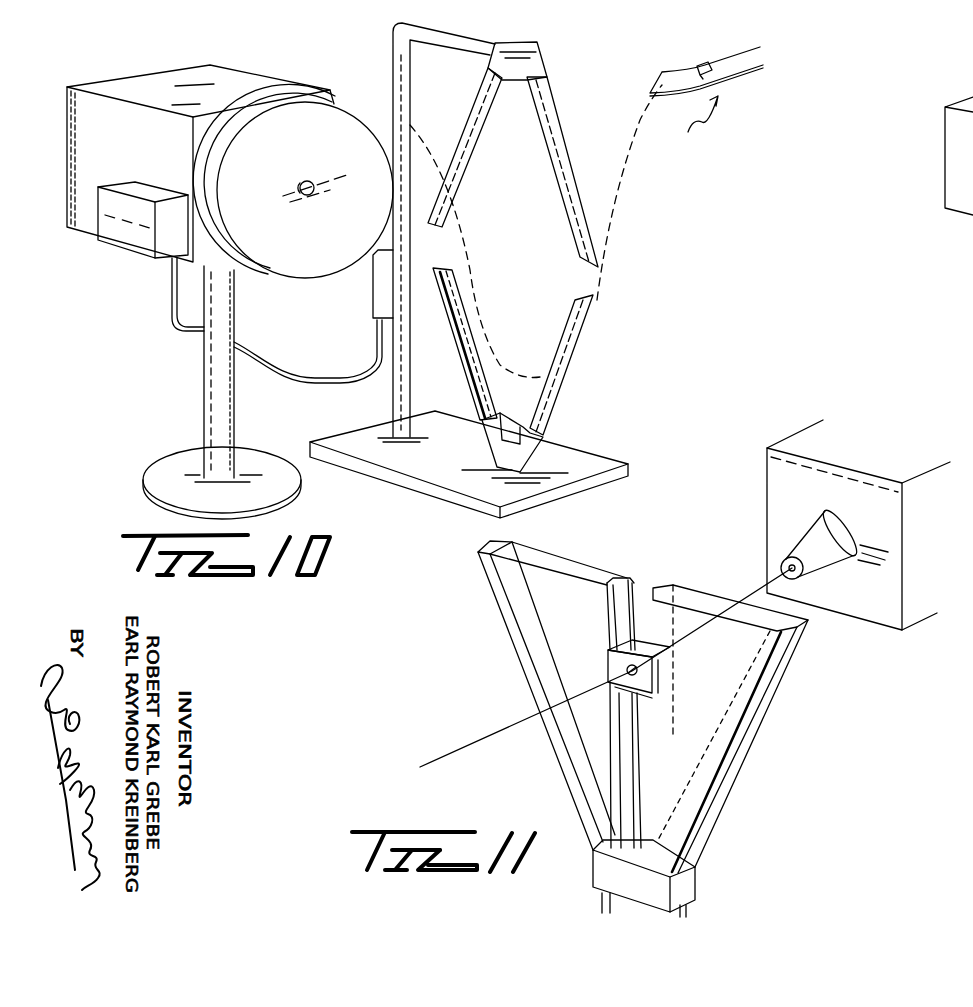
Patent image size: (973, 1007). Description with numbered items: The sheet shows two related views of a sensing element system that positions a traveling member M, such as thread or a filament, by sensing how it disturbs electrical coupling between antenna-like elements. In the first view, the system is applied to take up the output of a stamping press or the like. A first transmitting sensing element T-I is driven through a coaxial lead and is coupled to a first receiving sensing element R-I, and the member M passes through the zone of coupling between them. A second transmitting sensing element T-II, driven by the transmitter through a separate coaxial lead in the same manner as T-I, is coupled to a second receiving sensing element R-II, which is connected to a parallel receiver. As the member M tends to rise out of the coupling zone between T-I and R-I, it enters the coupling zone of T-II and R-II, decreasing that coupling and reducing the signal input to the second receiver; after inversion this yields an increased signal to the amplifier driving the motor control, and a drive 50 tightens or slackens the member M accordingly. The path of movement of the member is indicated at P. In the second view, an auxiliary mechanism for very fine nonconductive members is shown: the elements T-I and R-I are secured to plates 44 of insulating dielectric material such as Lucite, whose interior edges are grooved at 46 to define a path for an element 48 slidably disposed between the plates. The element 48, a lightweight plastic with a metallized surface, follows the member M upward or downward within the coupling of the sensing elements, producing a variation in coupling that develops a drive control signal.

In FIG. 10, the receiving sensing element R-I is at (463, 322).
In FIG. 11, the receiving sensing element R-I is at (573, 777).
In FIG. 10, the transmitting sensing element T-I is at (563, 367).
In FIG. 11, the transmitting sensing element T-I is at (708, 821).
In FIG. 10, the second receiving sensing element R-II is at (487, 80).
In FIG. 10, the second transmitting sensing element T-II is at (560, 147).
In FIG. 10, the traveling member M is at (607, 241).
In FIG. 11, the traveling member M is at (747, 590).
In FIG. 10, the path of movement P is at (697, 128).
In FIG. 11, the plates 44 is at (643, 682).
In FIG. 11, the grooves 46 is at (653, 592).
In FIG. 11, the slidable element 48 is at (645, 676).
In FIG. 11, the drive 50 is at (850, 601).